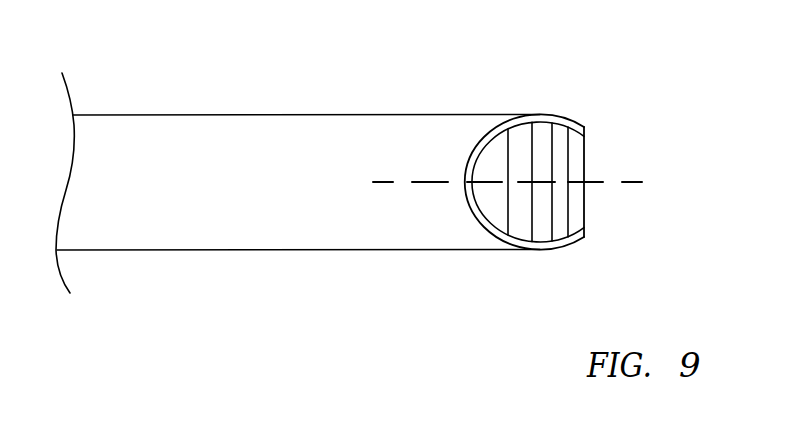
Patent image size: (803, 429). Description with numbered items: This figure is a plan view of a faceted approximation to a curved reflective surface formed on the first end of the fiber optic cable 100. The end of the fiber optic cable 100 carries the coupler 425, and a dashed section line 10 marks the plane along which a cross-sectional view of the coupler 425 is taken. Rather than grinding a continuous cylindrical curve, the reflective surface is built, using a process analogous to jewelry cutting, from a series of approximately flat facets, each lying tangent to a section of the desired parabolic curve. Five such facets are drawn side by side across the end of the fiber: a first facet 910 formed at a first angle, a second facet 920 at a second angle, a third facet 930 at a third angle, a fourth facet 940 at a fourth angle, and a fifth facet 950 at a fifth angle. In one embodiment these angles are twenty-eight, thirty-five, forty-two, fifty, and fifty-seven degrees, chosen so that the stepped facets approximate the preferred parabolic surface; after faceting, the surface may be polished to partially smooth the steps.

The coupler 425 is at (256, 72).
The fiber optic cable 100 is at (188, 200).
The section line 10- 10 is at (373, 182).
The first facet 910 is at (494, 199).
The second facet 920 is at (522, 218).
The third facet 930 is at (543, 224).
The fourth facet 940 is at (558, 224).
The fifth facet 950 is at (575, 208).